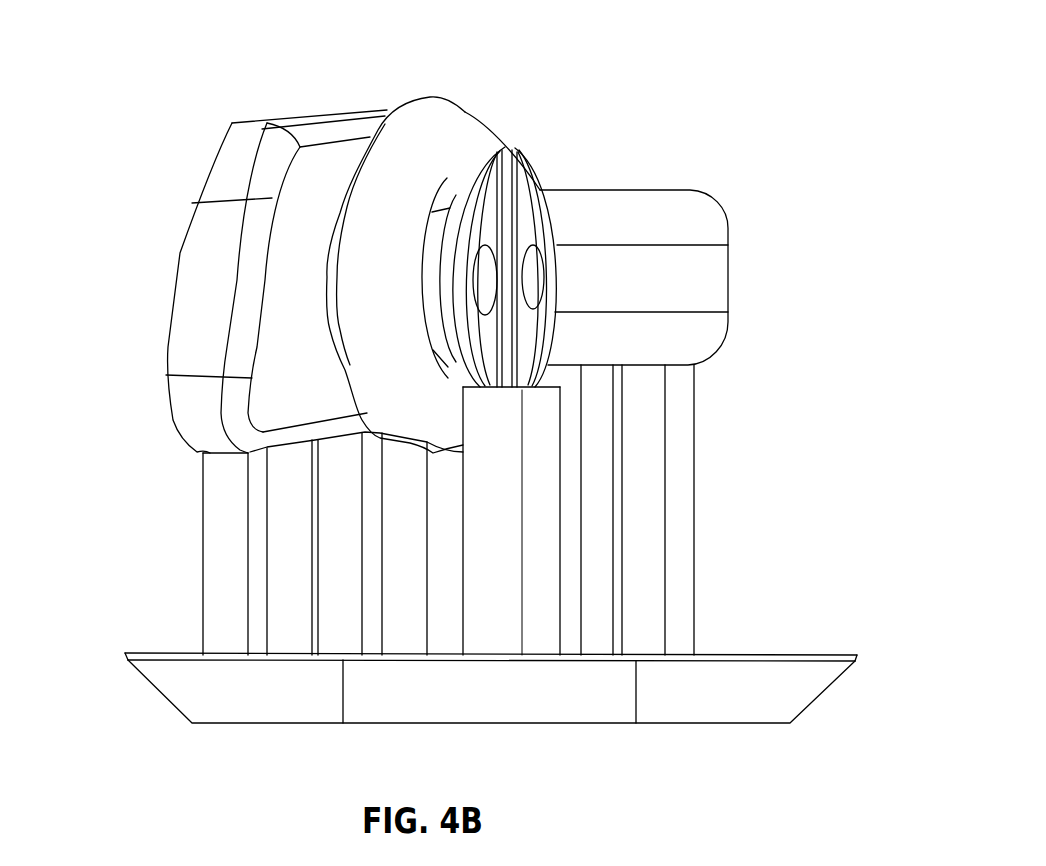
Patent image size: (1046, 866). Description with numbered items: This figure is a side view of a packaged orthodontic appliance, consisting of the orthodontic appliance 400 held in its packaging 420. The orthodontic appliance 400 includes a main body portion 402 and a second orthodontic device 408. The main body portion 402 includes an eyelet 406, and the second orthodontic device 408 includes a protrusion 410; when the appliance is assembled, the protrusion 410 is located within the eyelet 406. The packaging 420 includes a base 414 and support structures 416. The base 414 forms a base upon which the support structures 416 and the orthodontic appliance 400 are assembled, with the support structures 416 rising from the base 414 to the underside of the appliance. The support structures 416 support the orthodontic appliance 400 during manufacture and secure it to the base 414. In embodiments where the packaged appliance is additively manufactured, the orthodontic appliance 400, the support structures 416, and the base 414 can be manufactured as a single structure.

The orthodontic appliance 400 is at (159, 75).
The main body portion 402 is at (710, 205).
The eyelet 406 is at (467, 115).
The second orthodontic device 408 is at (174, 323).
The protrusion 410 is at (538, 178).
The base 414 is at (737, 724).
The support structures 416 is at (695, 410).
The packaging 420 is at (767, 629).